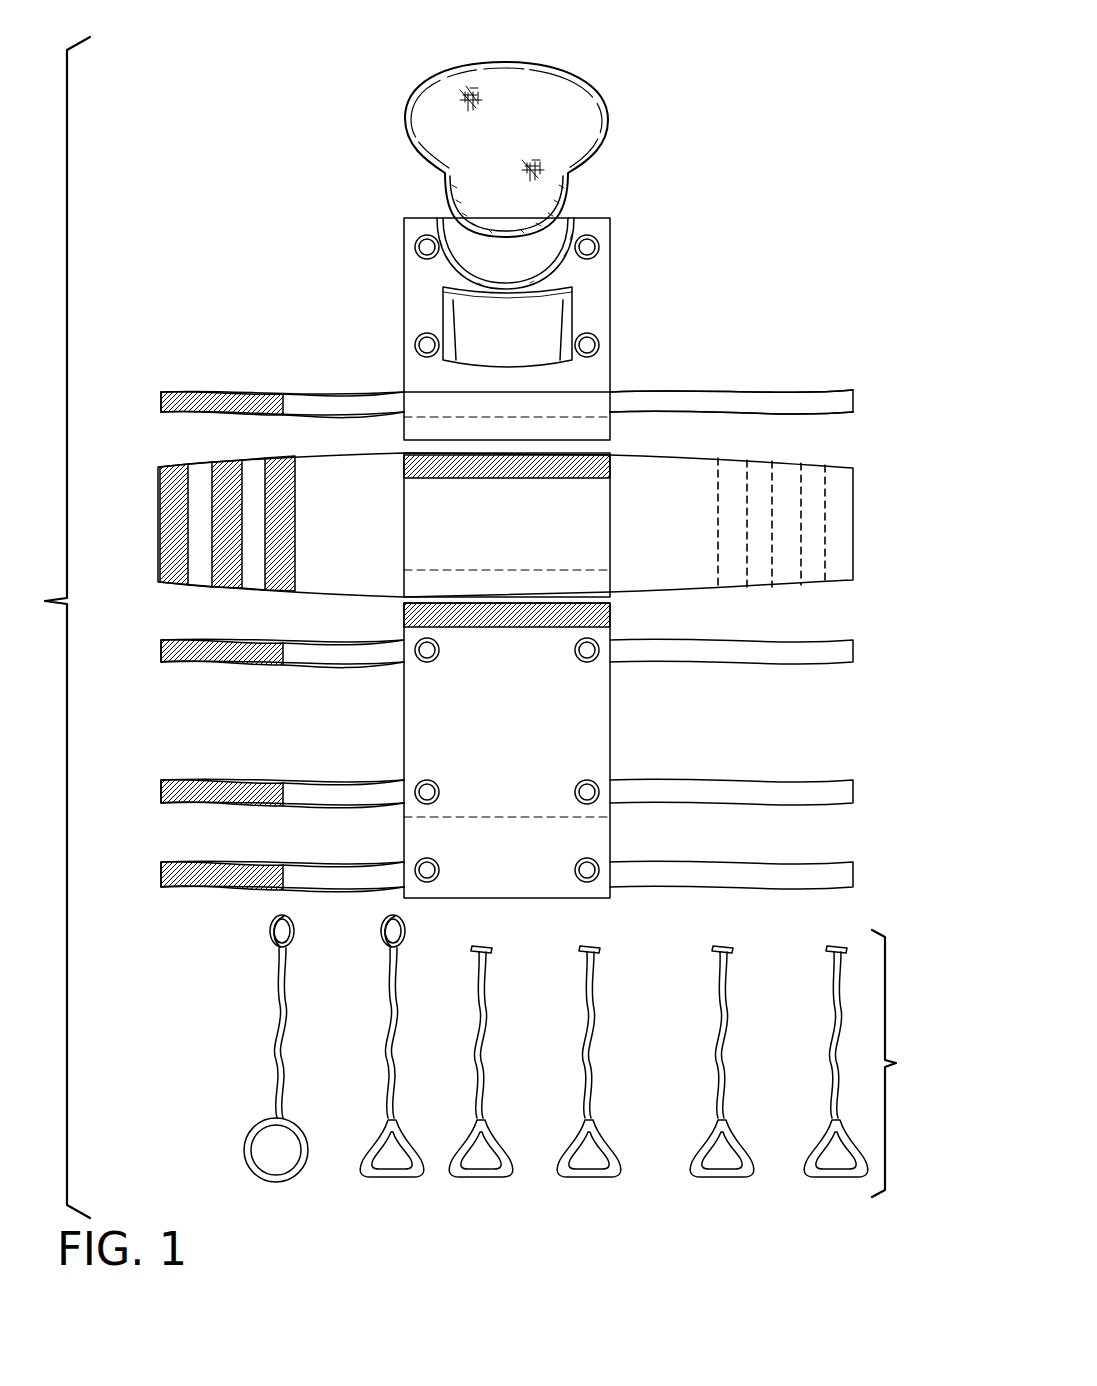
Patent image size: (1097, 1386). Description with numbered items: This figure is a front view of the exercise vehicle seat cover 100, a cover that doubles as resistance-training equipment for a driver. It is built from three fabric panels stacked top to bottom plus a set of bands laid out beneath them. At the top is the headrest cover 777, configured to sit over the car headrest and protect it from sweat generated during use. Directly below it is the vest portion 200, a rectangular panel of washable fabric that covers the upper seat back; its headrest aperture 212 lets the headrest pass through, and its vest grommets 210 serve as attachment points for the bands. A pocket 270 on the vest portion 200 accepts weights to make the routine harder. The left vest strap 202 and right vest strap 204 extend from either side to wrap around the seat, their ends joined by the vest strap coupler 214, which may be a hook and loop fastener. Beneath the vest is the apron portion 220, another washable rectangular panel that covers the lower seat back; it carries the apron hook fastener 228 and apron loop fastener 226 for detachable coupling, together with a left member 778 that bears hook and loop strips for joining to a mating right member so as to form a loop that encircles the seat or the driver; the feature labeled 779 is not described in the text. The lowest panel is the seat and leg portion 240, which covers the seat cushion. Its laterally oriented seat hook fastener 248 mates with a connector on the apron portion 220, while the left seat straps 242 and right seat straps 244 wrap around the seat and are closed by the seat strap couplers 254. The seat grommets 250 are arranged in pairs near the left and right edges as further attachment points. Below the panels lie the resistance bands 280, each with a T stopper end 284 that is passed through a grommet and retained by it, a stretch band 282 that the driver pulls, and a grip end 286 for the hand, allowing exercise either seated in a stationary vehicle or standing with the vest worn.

The exercise vehicle seat cover 100 is at (742, 162).
The headrest cover 777 is at (608, 117).
The headrest aperture 212 is at (445, 218).
The vest grommets 210 is at (587, 247).
The vest portion 200 is at (403, 365).
The right vest strap 204 is at (303, 398).
The vest strap coupler 214 is at (216, 398).
The left vest strap 202 is at (750, 385).
The pocket 270 is at (565, 313).
The apron hook fastener 228 is at (442, 478).
The apron portion 220 is at (598, 547).
The apron loop fastener 226 is at (185, 521).
The spacing between fastener strips 779 is at (318, 507).
The left member 778 is at (691, 525).
The seat hook fastener 248 is at (410, 620).
The seat and leg portion 240 is at (404, 746).
The left seat straps 242 is at (772, 863).
The right seat straps 244 is at (321, 862).
The seat strap couplers 254 is at (202, 657).
The seat grommets 250 is at (430, 870).
The resistance bands 280 is at (603, 1073).
The stretch band 282 is at (832, 1044).
The T stopper end 284 is at (838, 947).
The grip end 286 is at (810, 1157).